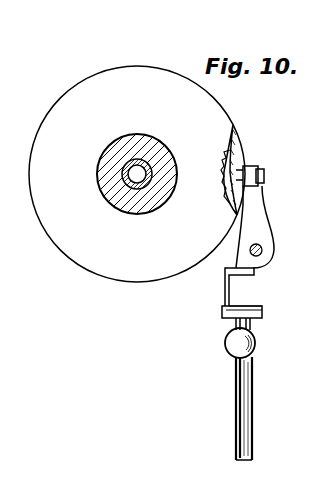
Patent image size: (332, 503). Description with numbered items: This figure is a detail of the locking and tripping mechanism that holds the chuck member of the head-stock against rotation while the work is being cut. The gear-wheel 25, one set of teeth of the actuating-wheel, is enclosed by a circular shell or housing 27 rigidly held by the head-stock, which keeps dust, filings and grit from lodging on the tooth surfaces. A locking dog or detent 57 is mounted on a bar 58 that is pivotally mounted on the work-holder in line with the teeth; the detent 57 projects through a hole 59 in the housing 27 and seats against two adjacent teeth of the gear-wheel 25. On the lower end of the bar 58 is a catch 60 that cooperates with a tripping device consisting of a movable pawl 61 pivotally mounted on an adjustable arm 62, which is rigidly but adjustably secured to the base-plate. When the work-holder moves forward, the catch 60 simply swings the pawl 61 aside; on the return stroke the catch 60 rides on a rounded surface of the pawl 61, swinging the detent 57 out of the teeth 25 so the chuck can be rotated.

The circular shell or housing 27 is at (70, 102).
The gear-wheel 25 is at (240, 162).
The hole 59 is at (252, 170).
The locking dog or detent 57 is at (264, 180).
The bar 58 is at (253, 222).
The catch 60 is at (230, 287).
The movable pawl 61 is at (232, 318).
The adjustable arm 62 is at (244, 366).